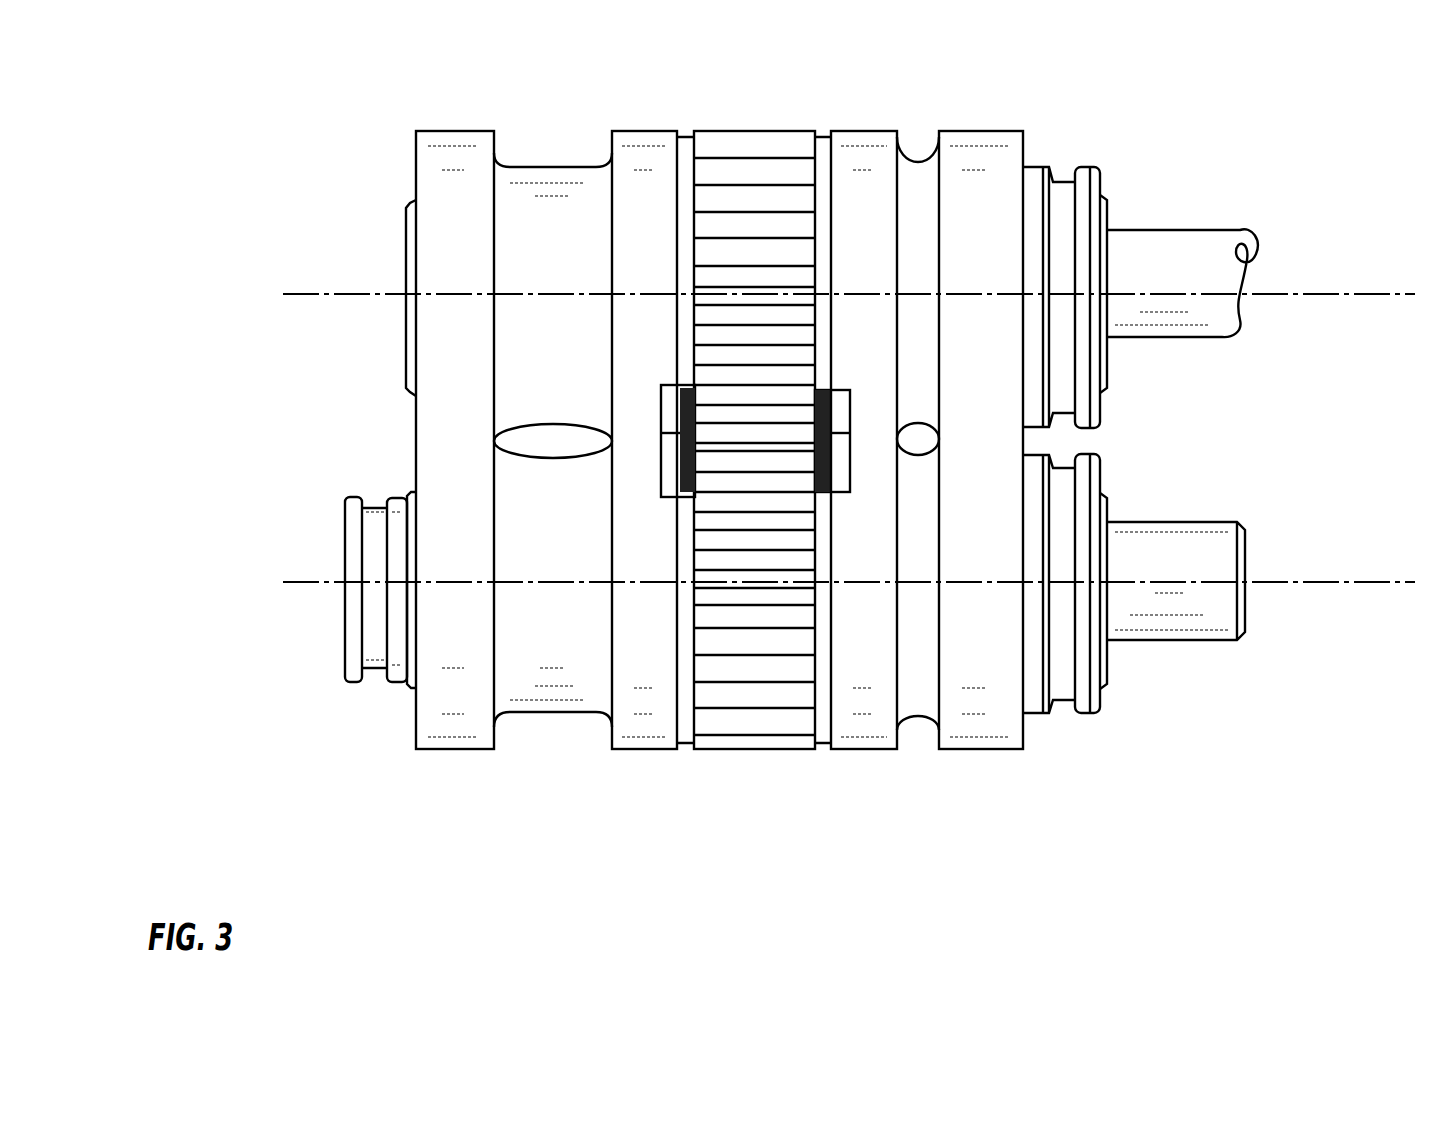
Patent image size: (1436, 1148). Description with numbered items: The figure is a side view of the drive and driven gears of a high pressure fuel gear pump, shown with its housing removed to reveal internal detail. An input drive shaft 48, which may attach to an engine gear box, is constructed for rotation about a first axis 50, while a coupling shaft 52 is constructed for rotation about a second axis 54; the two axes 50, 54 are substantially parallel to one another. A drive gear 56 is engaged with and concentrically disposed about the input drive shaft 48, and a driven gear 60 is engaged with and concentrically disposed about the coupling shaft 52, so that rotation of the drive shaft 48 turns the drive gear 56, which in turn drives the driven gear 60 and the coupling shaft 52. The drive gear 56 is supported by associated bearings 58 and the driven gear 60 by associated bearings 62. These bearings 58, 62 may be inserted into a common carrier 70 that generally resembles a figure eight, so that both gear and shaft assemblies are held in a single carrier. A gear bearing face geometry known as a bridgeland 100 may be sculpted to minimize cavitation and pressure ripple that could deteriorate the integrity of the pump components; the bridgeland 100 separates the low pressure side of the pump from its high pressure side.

The input drive shaft 48 is at (1185, 640).
The first axis 50 is at (1355, 582).
The coupling shaft 52 is at (1165, 337).
The second axis 54 is at (1355, 294).
The drive gear 56 is at (788, 749).
The bearings 58 is at (417, 690).
The driven gear 60 is at (773, 131).
The bearings 62 is at (416, 173).
The common carrier 70 is at (633, 131).
The bridgeland 100 is at (682, 463).